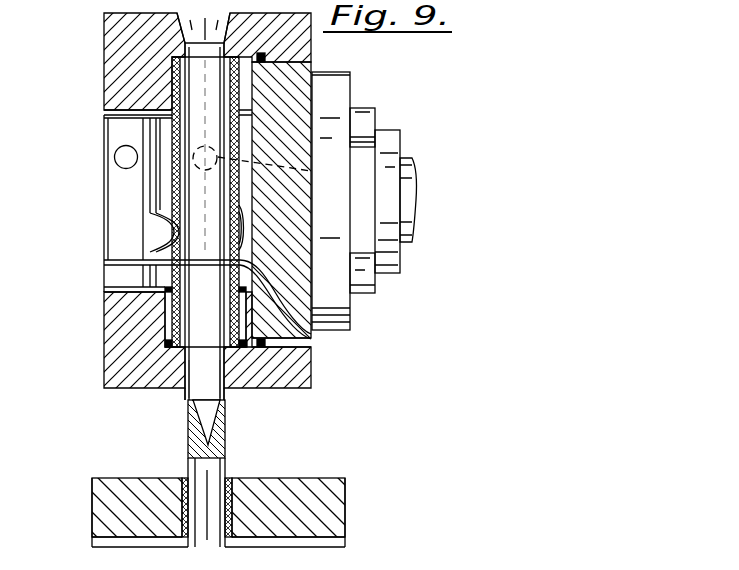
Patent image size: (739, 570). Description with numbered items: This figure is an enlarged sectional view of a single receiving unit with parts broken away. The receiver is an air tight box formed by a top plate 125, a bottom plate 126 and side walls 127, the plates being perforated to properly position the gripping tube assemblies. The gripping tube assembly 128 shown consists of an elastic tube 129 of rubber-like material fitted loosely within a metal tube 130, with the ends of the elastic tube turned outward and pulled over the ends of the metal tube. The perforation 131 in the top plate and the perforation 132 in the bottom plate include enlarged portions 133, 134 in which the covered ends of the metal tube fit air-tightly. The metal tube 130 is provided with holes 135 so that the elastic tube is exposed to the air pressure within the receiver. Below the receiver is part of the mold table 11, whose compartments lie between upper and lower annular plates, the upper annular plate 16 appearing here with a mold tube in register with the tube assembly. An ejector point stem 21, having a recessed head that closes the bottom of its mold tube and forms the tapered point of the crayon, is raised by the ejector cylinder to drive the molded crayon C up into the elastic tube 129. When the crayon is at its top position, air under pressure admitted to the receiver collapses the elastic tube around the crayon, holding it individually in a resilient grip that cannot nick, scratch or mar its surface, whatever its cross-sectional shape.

The top plate 125 is at (120, 46).
The enlarged portion 133 is at (172, 78).
The metal tube 130 is at (178, 128).
The holes 135 is at (176, 227).
The gripping tube assembly 128 is at (120, 188).
The elastic tube 129 is at (172, 230).
The enlarged portion 134 is at (168, 320).
The bottom plate 126 is at (120, 360).
The perforation 132 is at (186, 358).
The molded crayon C is at (207, 366).
The ejector point stem 21 is at (207, 466).
The upper annular plate 16 is at (298, 496).
The mold table 11 is at (366, 504).
The perforation 131 is at (225, 32).
The side wall 127 is at (311, 117).